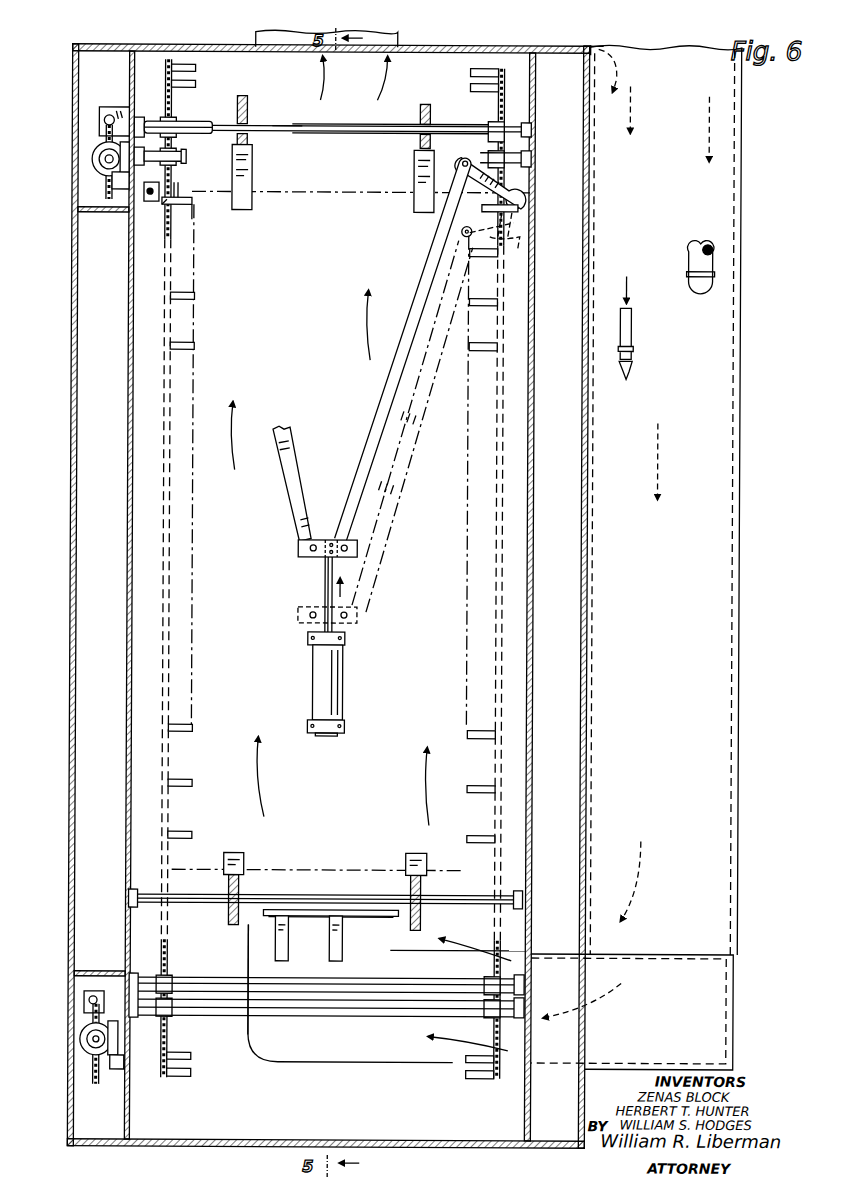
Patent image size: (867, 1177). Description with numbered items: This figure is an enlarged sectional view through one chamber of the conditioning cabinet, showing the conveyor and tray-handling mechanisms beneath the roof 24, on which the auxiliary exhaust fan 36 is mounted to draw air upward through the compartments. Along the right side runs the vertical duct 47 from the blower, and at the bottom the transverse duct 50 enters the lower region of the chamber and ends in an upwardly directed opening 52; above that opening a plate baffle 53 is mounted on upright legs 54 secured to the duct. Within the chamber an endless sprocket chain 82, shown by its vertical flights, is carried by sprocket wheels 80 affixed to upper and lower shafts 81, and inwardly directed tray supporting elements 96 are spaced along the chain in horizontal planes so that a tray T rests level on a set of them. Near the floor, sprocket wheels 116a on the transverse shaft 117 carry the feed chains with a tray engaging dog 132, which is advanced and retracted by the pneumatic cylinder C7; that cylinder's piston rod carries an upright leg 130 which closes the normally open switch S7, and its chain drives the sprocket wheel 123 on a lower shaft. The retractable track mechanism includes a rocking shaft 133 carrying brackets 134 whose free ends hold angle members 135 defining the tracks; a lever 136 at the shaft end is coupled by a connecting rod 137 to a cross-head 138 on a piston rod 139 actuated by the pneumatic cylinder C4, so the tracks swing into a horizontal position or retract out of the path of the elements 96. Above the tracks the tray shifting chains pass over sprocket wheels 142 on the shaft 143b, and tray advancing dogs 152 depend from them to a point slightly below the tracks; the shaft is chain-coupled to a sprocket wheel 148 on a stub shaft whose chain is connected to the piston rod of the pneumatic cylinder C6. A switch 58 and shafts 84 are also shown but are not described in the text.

The roof 24 is at (224, 46).
The auxiliary exhaust fan 36 is at (262, 37).
The vertical duct 47 is at (734, 523).
The transverse duct 50 is at (687, 1037).
The upwardly directed opening 52 is at (262, 945).
The plate baffle 53 is at (284, 908).
The upright leg 54 is at (330, 950).
The switch 58 is at (97, 110).
The sprocket wheel 80 is at (164, 114).
The upper shaft 81 is at (206, 126).
The endless sprocket chain 82 is at (161, 510).
The shaft 84 is at (186, 158).
The tray supporting element 96 is at (194, 84).
The sprocket wheel 116a is at (234, 912).
The transverse shaft 117 is at (348, 910).
The sprocket wheel 123 is at (101, 1086).
The upright leg 130 is at (91, 1000).
The tray engaging dog 132 is at (236, 853).
The rocking shaft 133 is at (148, 202).
The bracket 134 is at (188, 208).
The angle member 135 is at (180, 186).
The lever 136 is at (522, 188).
The connecting rod 137 is at (423, 258).
The cross-head 138 is at (332, 540).
The piston rod 139 is at (324, 580).
The sprocket wheel 142 is at (242, 102).
The shaft 143b is at (273, 126).
The sprocket wheel 148 is at (103, 213).
The tray advancing dog 152 is at (101, 136).
The pneumatic cylinder C4 is at (318, 672).
The pneumatic cylinder C6 is at (90, 160).
The pneumatic cylinder C7 is at (82, 1040).
The normally open switch S7 is at (97, 992).
The tray path T is at (312, 192).